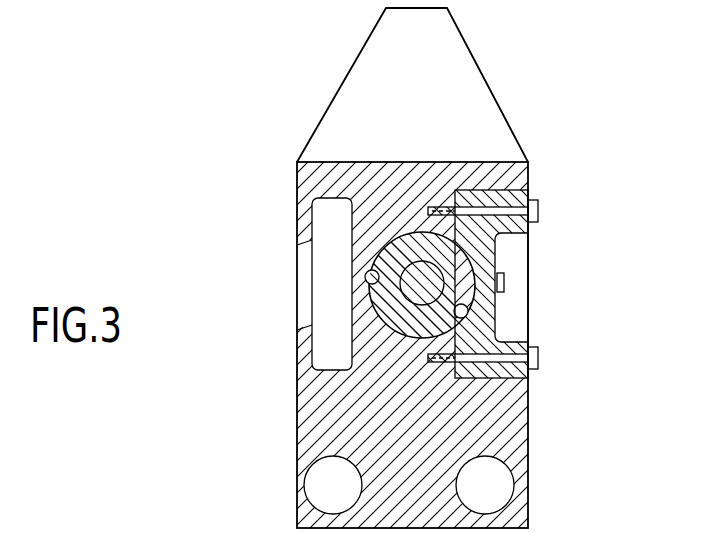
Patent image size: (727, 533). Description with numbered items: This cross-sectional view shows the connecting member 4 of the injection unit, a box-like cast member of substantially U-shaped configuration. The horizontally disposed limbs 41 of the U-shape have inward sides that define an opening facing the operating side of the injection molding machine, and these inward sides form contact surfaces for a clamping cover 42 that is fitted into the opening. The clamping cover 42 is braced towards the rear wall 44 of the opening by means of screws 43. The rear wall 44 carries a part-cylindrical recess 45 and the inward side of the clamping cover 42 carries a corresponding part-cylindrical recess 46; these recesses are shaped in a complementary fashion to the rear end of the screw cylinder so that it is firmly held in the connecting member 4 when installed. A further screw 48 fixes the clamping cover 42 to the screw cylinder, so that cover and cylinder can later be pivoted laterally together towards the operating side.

The connecting member 4 is at (522, 98).
The limbs 41 is at (527, 161).
The clamping cover 42 is at (500, 252).
The screws 43 is at (538, 358).
The rear wall 44 is at (386, 240).
The part-cylindrical recess 45 is at (368, 285).
The part-cylindrical recess 46 is at (500, 318).
The screw 48 is at (504, 286).